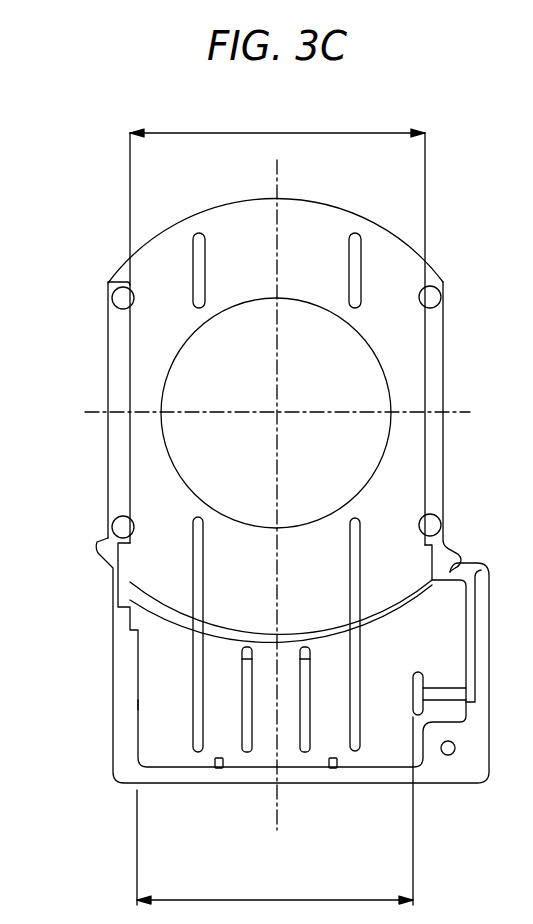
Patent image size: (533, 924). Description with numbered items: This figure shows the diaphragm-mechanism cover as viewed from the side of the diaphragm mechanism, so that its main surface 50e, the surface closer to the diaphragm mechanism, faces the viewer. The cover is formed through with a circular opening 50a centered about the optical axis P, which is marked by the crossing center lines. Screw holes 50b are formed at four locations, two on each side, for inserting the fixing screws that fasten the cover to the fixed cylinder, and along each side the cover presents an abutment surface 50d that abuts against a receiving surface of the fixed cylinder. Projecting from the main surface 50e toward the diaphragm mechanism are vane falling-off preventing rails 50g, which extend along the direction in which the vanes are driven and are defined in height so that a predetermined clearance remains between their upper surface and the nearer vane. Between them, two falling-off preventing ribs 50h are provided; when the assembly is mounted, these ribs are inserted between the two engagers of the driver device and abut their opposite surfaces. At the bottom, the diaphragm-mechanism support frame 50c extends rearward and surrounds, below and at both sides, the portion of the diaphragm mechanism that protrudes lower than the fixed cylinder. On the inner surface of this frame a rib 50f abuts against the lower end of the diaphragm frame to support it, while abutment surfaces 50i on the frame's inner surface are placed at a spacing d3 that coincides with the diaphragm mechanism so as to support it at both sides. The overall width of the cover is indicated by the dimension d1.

The opening 50a is at (180, 472).
The screw holes 50b is at (108, 283).
The diaphragm-mechanism support frame 50c is at (125, 784).
The abutment surface 50d is at (120, 373).
The main surface 50e is at (170, 232).
The rib 50f is at (218, 771).
The vane falling-off preventing rails 50g is at (203, 273).
The falling-off preventing ribs 50h is at (247, 755).
The abutment surfaces 50i is at (140, 706).
The optical axis P is at (279, 412).
The spacing d1 is at (277, 122).
The spacing d3 is at (275, 811).